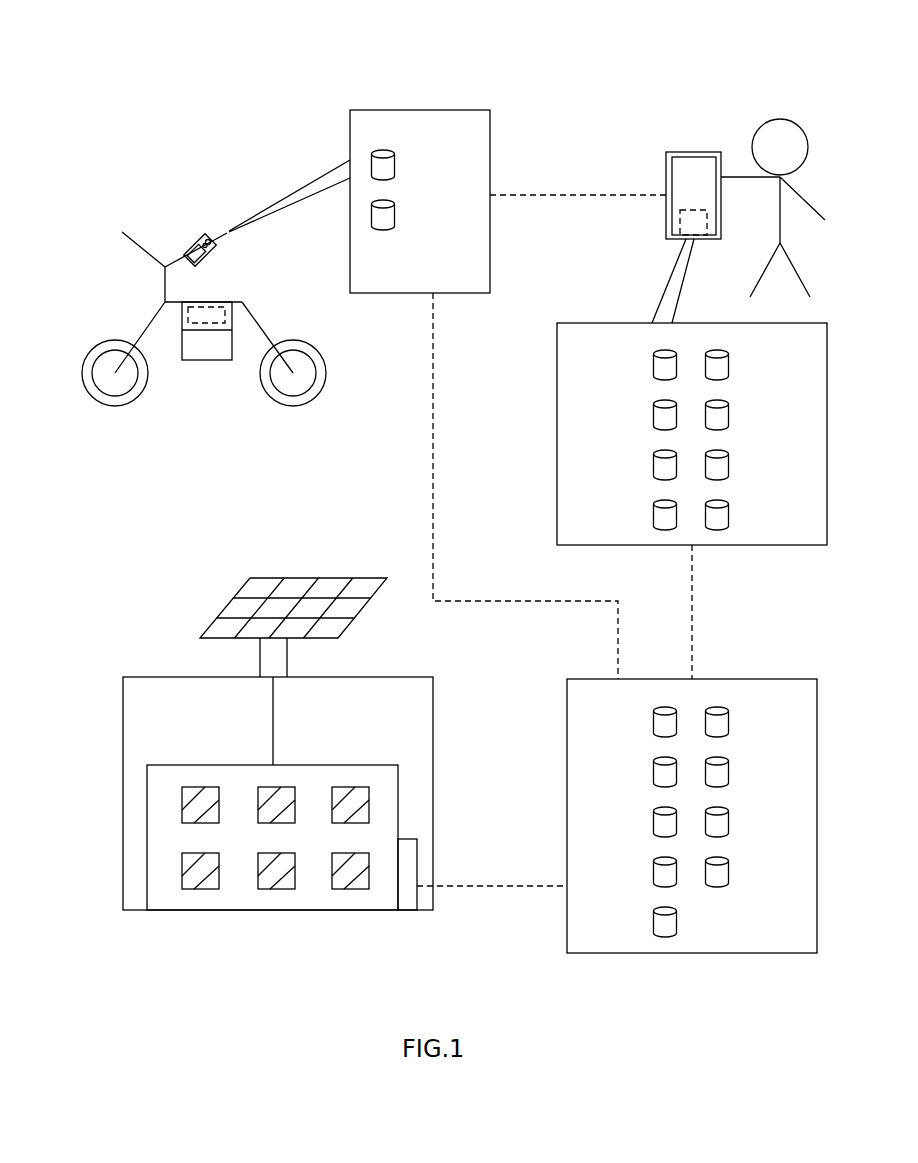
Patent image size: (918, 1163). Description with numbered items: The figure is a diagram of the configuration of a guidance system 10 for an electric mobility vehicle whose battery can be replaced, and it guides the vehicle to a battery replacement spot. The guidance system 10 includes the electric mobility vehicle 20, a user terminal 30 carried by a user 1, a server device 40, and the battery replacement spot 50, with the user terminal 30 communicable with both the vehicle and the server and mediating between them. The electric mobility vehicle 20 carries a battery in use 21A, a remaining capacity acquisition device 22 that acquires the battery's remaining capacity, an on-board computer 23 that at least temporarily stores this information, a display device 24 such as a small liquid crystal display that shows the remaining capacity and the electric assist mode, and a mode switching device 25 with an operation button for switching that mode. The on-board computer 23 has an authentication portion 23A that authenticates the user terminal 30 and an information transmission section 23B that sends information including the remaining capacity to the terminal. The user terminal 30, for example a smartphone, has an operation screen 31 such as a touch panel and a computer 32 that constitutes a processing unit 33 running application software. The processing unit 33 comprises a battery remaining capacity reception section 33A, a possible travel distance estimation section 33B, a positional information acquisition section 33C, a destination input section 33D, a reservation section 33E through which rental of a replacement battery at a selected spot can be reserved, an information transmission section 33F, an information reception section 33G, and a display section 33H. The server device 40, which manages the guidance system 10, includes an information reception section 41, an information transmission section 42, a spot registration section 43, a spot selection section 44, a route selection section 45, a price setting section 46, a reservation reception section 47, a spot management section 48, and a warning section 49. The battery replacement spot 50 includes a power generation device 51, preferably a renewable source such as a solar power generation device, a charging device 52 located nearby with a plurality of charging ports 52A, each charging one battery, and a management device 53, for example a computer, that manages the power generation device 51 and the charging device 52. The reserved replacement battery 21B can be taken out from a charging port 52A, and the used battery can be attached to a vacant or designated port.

The user 1 is at (783, 100).
The guidance system 10 is at (232, 75).
The electric mobility vehicle 20 is at (117, 192).
The battery in use 21A is at (203, 357).
The replacement battery 21B is at (200, 802).
The remaining capacity acquisition device 22 is at (222, 310).
The on-board computer 23 is at (417, 108).
The authentication portion 23A is at (397, 163).
The information transmission section 23B is at (397, 213).
The display device 24 is at (198, 243).
The mode switching device 25 is at (207, 237).
The user terminal 30 is at (688, 152).
The operation screen 31 is at (683, 168).
The computer 32 is at (662, 227).
The processing unit 33 is at (557, 380).
The battery remaining capacity reception section 33A is at (653, 364).
The possible travel distance estimation section 33B is at (653, 414).
The positional information acquisition section 33C is at (653, 464).
The destination input section 33D is at (653, 514).
The reservation section 33E is at (729, 364).
The information transmission section 33F is at (729, 414).
The information reception section 33G is at (729, 464).
The display section 33H is at (729, 514).
The server device 40 is at (757, 678).
The information reception section 41 is at (653, 721).
The information transmission section 42 is at (653, 771).
The spot registration section 43 is at (653, 821).
The spot selection section 44 is at (653, 871).
The route selection section 45 is at (653, 921).
The price setting section 46 is at (729, 721).
The reservation reception section 47 is at (729, 771).
The spot management section 48 is at (729, 821).
The warning section 49 is at (729, 871).
The battery replacement spot 50 is at (187, 590).
The power generation device 51 is at (323, 577).
The charging device 52 is at (372, 765).
The charging port 52A is at (370, 807).
The management device 53 is at (418, 853).